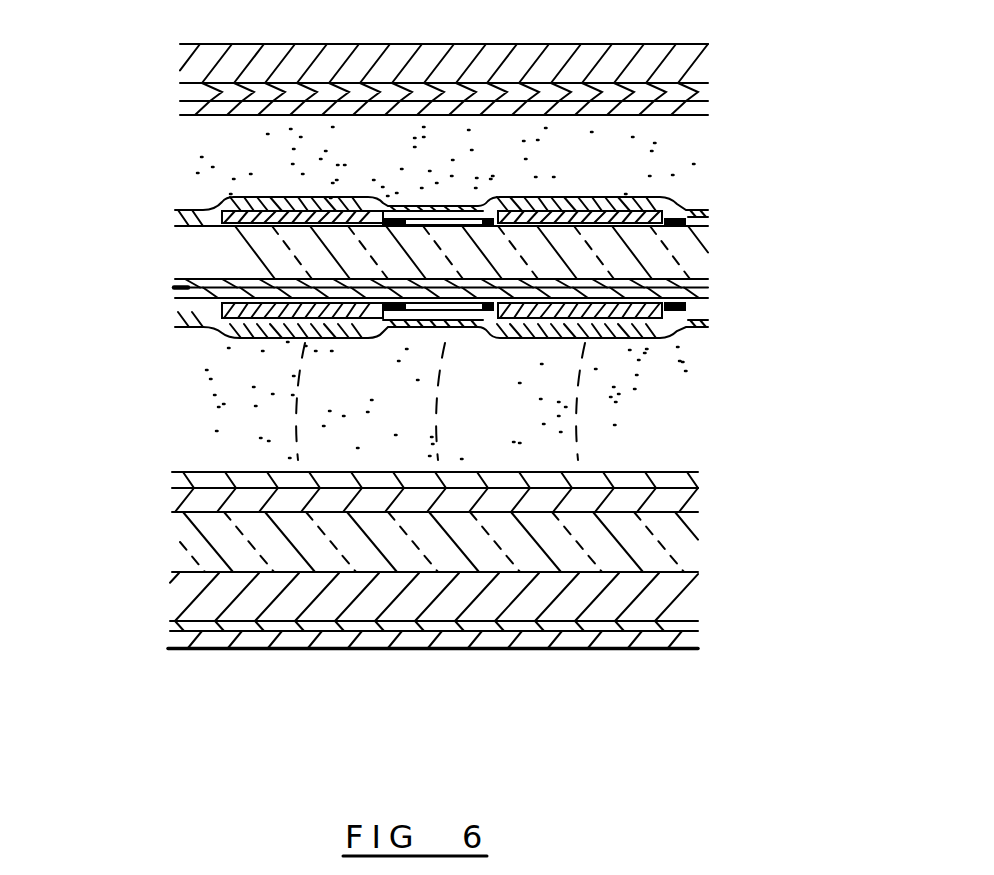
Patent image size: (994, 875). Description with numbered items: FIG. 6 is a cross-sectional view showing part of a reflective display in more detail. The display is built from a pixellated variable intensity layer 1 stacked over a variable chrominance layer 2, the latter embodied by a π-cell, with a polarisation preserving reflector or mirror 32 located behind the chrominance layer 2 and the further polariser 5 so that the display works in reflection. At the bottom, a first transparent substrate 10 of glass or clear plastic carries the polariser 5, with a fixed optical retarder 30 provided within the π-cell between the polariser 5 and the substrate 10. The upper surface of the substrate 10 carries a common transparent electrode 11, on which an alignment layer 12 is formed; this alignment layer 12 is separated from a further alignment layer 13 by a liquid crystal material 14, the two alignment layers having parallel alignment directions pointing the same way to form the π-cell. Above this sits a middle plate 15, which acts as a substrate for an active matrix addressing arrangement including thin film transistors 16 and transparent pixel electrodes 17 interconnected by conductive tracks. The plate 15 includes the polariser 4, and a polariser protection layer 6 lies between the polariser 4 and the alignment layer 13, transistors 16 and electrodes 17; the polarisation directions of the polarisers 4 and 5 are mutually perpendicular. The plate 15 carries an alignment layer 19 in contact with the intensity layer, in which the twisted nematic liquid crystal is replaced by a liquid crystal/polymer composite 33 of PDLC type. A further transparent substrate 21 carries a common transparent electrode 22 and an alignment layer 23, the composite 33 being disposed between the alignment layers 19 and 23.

The pixellated variable intensity layer 1 is at (783, 148).
The variable chrominance layer 2 is at (770, 383).
The polariser 4 is at (178, 288).
The further polariser 5 is at (172, 624).
The polariser protection layer 6 is at (712, 292).
The first transparent substrate 10 is at (193, 535).
The common transparent electrode 11 is at (183, 503).
The alignment layer 12 is at (182, 480).
The further alignment layer 13 is at (180, 306).
The liquid crystal material 14 is at (205, 380).
The middle plate 15 is at (760, 246).
The thin film transistors 16 is at (458, 212).
The pixel electrodes 17 is at (222, 279).
The alignment layer 19 is at (205, 214).
The further transparent substrate 21 is at (182, 64).
The common transparent electrode 22 is at (183, 93).
The alignment layer 23 is at (183, 118).
The fixed optical retarder 30 is at (230, 594).
The polarisation preserving reflector 32 is at (377, 640).
The liquid crystal/polymer composite 33 is at (197, 162).